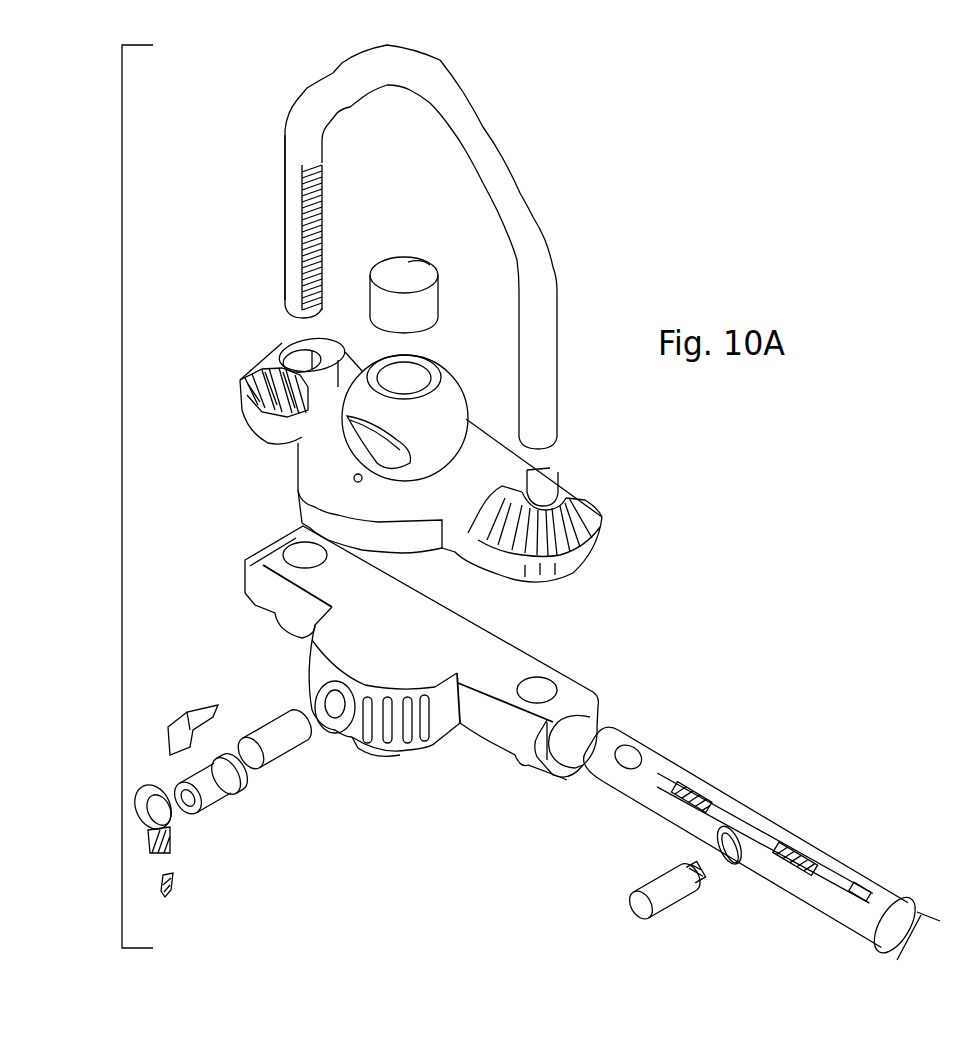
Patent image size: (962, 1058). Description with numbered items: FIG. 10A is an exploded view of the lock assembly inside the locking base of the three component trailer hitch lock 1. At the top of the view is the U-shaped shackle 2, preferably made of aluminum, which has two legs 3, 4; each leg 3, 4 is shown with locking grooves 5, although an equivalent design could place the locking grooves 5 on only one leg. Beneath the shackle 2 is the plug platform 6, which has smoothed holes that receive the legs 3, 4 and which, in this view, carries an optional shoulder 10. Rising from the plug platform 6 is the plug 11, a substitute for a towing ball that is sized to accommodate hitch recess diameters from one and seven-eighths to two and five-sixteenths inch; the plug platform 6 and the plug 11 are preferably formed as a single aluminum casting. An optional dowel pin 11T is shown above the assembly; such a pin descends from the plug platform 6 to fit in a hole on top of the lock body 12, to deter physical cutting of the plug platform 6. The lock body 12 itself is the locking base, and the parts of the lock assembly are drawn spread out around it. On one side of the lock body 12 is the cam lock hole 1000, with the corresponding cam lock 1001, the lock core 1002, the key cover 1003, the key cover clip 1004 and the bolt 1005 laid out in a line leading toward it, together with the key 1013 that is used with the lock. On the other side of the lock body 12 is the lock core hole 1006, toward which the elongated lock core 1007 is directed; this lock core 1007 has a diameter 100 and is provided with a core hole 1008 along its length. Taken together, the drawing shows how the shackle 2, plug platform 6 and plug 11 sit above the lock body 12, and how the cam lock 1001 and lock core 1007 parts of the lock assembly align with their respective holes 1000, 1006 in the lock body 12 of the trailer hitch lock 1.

The three component trailer hitch lock 1 is at (130, 496).
The U-shaped shackle 2 is at (457, 100).
The leg 3 is at (283, 158).
The leg 4 is at (543, 355).
The locking grooves 5 is at (318, 203).
The plug platform 6 is at (273, 360).
The shoulder 10 is at (547, 490).
The plug 11 is at (447, 390).
The dowel pin 11T is at (427, 307).
The lock body 12 is at (454, 661).
The diameter 100 is at (924, 939).
The cam lock hole 1000 is at (327, 703).
The cam lock 1001 is at (285, 750).
The lock core 1002 is at (225, 785).
The key cover 1003 is at (164, 815).
The key cover clip 1004 is at (172, 842).
The bolt 1005 is at (164, 893).
The lock core hole 1006 is at (567, 737).
The lock core 1007 is at (738, 840).
The core hole 1008 is at (729, 845).
The key 1013 is at (178, 723).